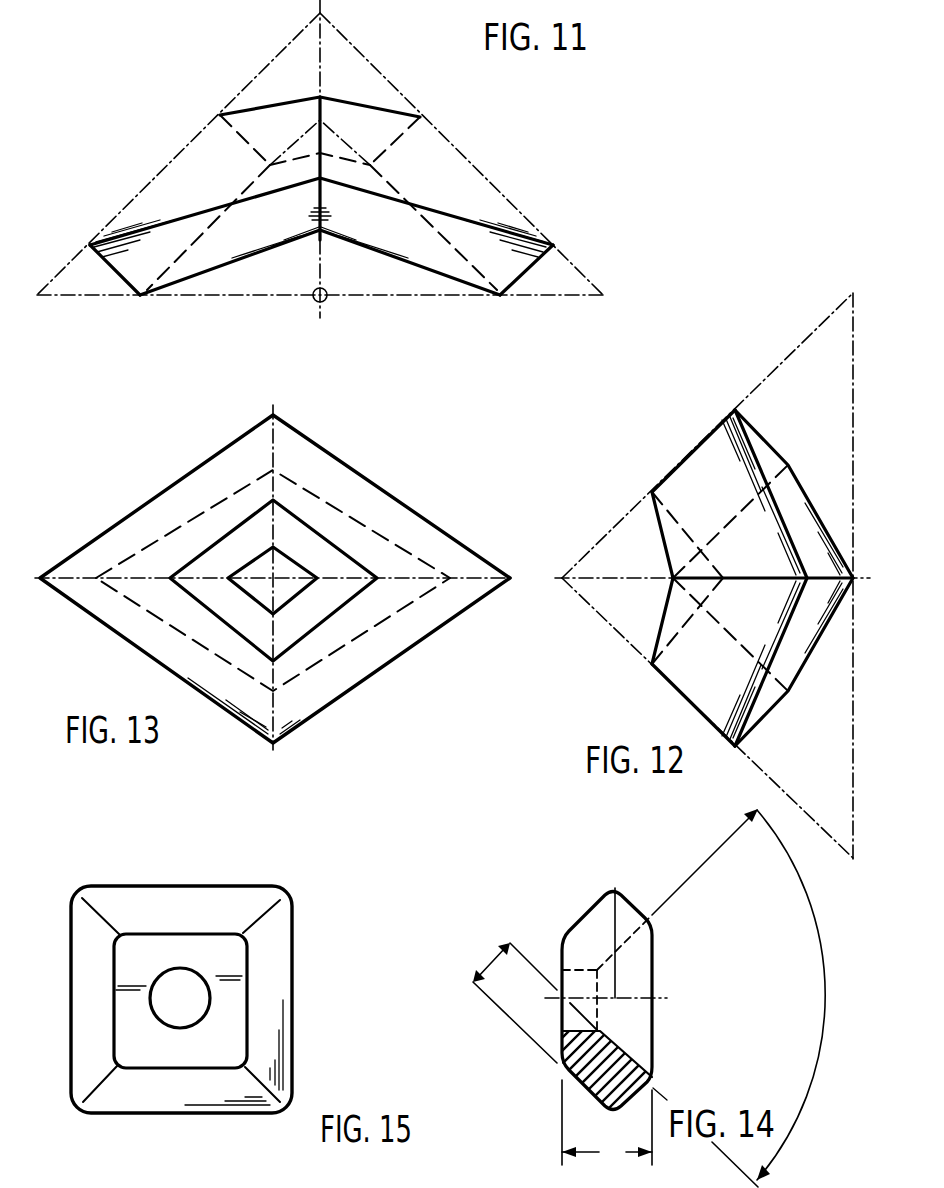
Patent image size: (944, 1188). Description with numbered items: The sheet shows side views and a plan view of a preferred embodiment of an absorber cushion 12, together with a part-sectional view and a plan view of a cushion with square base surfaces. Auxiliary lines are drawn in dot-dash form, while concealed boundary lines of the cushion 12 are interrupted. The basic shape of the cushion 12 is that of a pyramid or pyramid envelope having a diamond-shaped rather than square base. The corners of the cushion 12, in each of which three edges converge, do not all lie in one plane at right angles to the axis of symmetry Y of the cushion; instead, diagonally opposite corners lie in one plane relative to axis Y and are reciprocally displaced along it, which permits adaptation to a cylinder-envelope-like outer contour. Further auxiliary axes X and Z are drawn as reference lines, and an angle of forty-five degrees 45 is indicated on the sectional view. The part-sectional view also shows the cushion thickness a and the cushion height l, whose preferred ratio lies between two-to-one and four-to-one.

In FIG. 11, the absorber cushion 12 is at (450, 176).
In FIG. 13, the absorber cushion 12 is at (377, 512).
In FIG. 12, the absorber cushion 12 is at (702, 464).
In FIG. 11, the X axis X is at (603, 295).
In FIG. 13, the axis of symmetry Y is at (267, 583).
In FIG. 12, the axis of symmetry Y is at (624, 579).
In FIG. 11, the Z axis Z is at (316, 302).
In FIG. 14, the cushion thickness a is at (607, 1124).
In FIG. 14, the cushion height l is at (515, 1003).
In FIG. 14, the 45 degree angle 45 is at (754, 998).